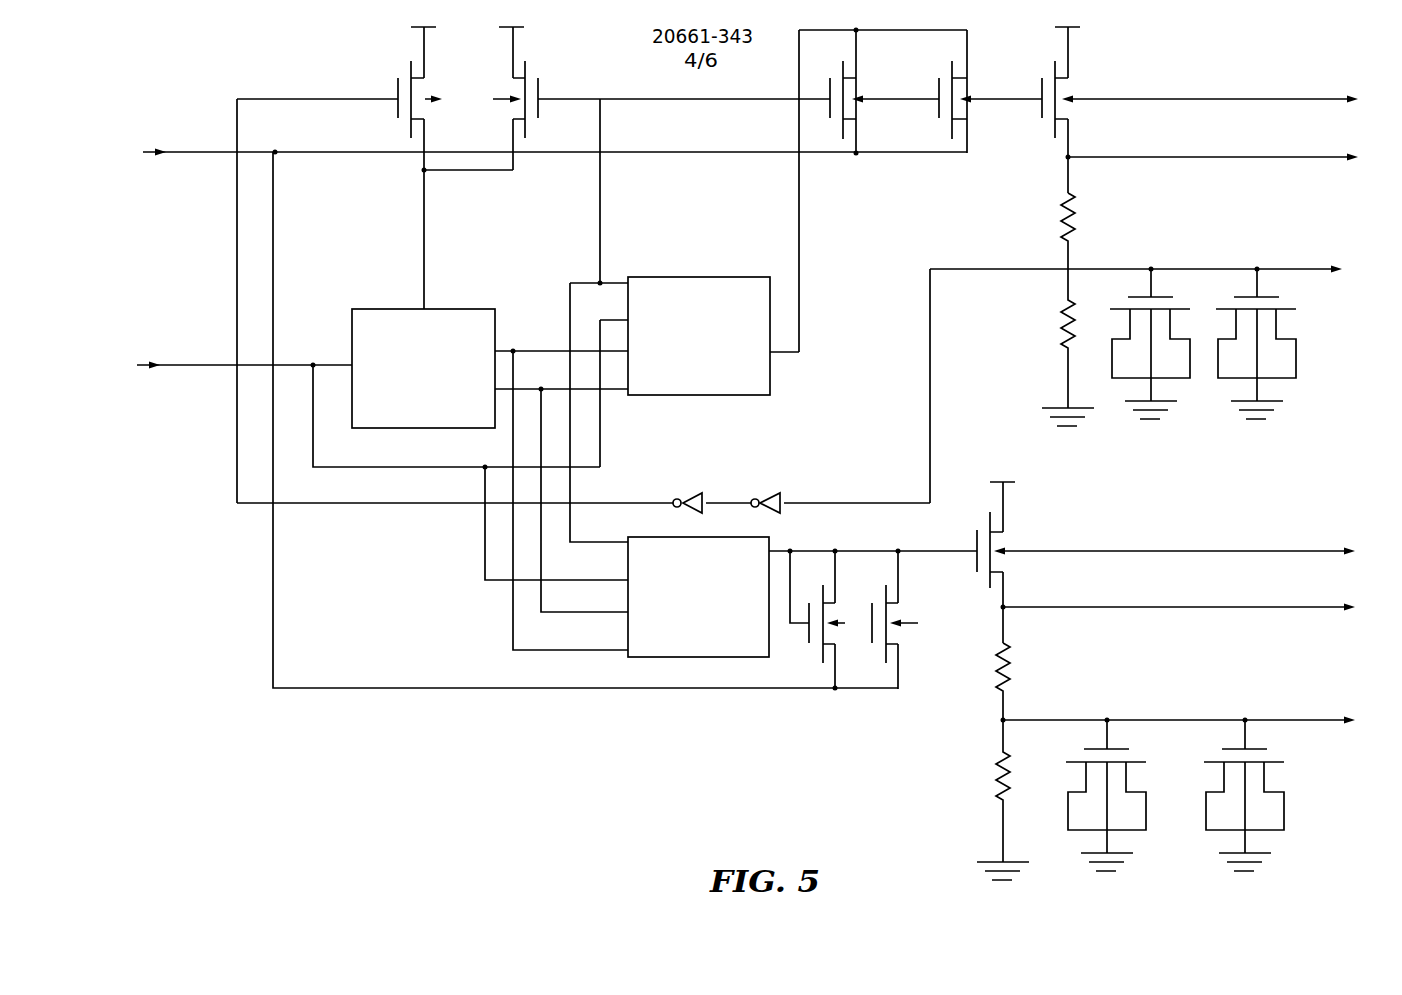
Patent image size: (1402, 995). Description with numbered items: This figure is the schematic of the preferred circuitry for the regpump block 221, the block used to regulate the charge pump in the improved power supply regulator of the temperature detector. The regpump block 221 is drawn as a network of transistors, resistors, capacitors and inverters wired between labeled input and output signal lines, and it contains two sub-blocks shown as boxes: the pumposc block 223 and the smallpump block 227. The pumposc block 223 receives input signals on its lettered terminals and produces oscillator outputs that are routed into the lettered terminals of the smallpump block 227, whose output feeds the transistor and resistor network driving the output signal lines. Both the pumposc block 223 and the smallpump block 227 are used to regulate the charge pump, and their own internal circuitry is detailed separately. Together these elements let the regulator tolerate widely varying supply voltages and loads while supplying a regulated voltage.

The regpump block 221 is at (1212, 63).
The pumposc block 223 is at (448, 309).
The smallpump block 227 is at (671, 277).